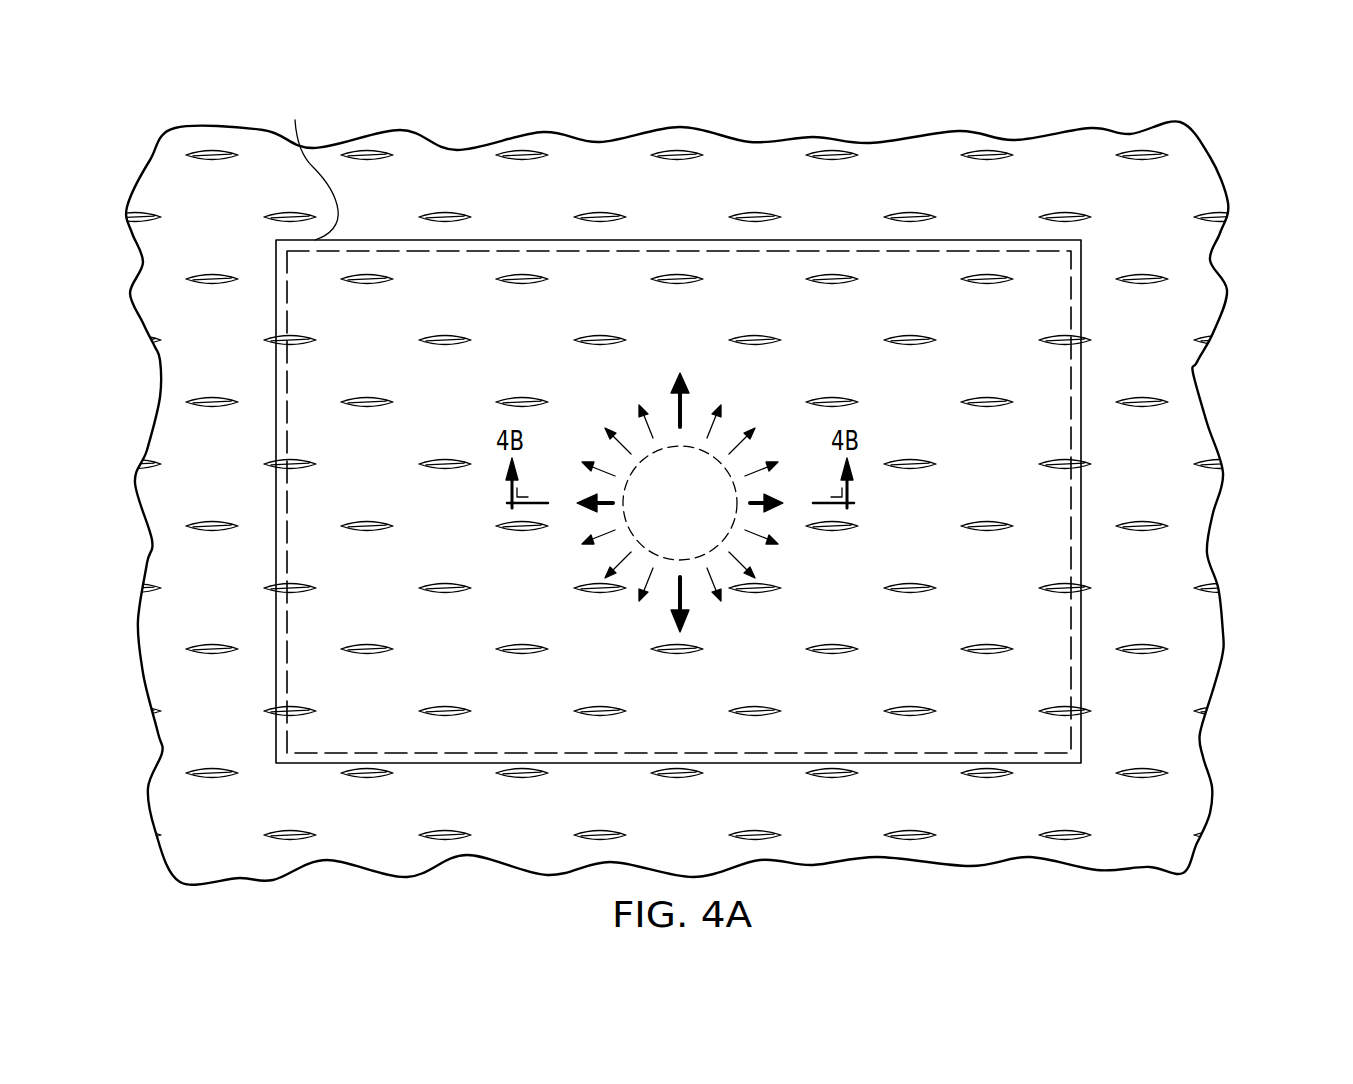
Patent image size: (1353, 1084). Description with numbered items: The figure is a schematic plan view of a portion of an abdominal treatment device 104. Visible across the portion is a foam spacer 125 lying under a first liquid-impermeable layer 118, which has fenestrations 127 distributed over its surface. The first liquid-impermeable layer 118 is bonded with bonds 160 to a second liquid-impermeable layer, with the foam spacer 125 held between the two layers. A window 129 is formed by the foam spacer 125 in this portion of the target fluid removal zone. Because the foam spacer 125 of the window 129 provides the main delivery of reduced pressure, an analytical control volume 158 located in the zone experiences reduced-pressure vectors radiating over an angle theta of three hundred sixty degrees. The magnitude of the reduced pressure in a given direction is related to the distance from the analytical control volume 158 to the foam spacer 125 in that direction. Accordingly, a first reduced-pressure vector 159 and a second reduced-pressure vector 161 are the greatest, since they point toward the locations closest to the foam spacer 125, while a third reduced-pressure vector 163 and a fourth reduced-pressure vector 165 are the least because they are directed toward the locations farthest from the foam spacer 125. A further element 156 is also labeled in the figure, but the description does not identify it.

The abdominal treatment device 104 is at (1205, 287).
The first liquid-impermeable layer 118 is at (1043, 682).
The foam spacer 125 is at (702, 456).
The fenestrations 127 is at (366, 151).
The window 129 is at (307, 164).
The radial directions 156 is at (681, 413).
The analytical control volume 158 is at (737, 510).
The first reduced-pressure vector 159 is at (678, 385).
The bonds 160 is at (287, 371).
The second reduced-pressure vector 161 is at (681, 593).
The third reduced-pressure vector 163 is at (600, 503).
The fourth reduced-pressure vector 165 is at (757, 502).